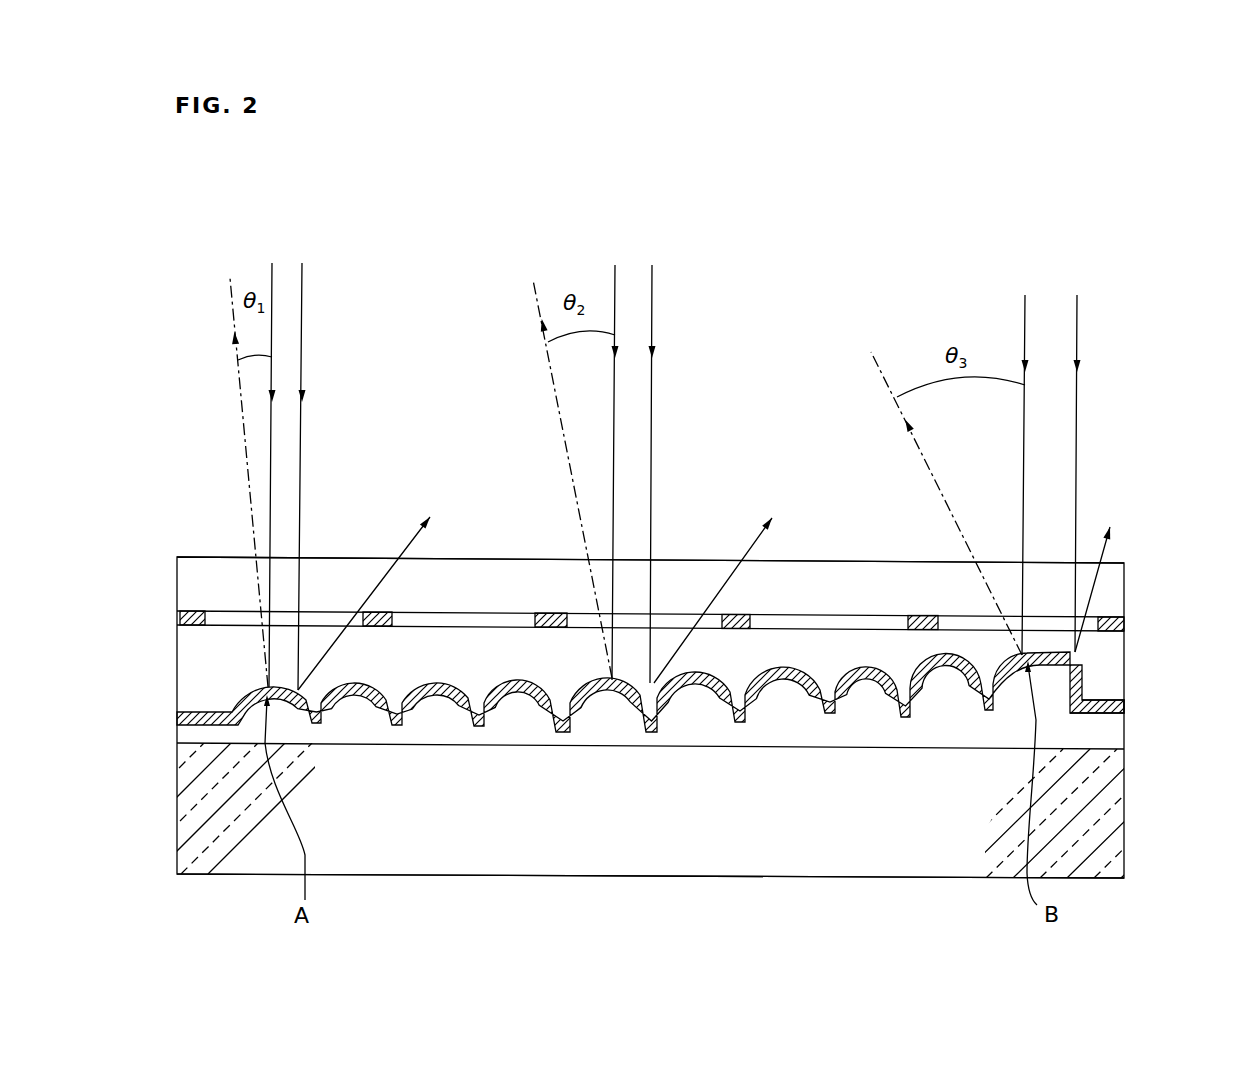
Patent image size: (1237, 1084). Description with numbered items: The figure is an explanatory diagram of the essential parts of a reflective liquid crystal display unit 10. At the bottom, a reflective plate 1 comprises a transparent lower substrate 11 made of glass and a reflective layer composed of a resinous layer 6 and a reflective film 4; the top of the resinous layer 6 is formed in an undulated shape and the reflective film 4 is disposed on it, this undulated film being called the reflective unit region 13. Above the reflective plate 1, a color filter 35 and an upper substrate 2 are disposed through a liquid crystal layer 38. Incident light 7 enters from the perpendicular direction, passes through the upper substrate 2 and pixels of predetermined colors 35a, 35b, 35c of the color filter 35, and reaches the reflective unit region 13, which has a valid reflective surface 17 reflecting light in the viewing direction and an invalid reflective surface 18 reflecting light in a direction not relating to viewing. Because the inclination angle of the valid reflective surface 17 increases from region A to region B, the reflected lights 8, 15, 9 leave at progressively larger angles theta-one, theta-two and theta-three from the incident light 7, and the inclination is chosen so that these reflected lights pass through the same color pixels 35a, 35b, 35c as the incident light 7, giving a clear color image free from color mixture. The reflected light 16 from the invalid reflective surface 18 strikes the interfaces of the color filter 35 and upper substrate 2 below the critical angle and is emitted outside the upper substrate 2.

The reflective plate 1 is at (1173, 702).
The upper substrate 2 is at (187, 572).
The reflective film 4 is at (1124, 713).
The resinous layer 6 is at (187, 733).
The incident light 7 is at (272, 280).
The reflected light 8 is at (240, 390).
The reflected light 9 is at (883, 372).
The reflective liquid crystal display unit 10 is at (1229, 480).
The lower substrate 11 is at (1108, 852).
The reflective unit region 13 is at (290, 715).
The reflected light 15 is at (562, 428).
The reflected light 16 is at (414, 539).
The valid reflective surface 17 is at (258, 687).
The invalid reflective surface 18 is at (298, 687).
The color filter 35 is at (170, 619).
The pixel of predetermined color 35a is at (303, 625).
The pixel of predetermined color 35b is at (707, 620).
The pixel of predetermined color 35c is at (1053, 625).
The liquid crystal layer 38 is at (187, 655).